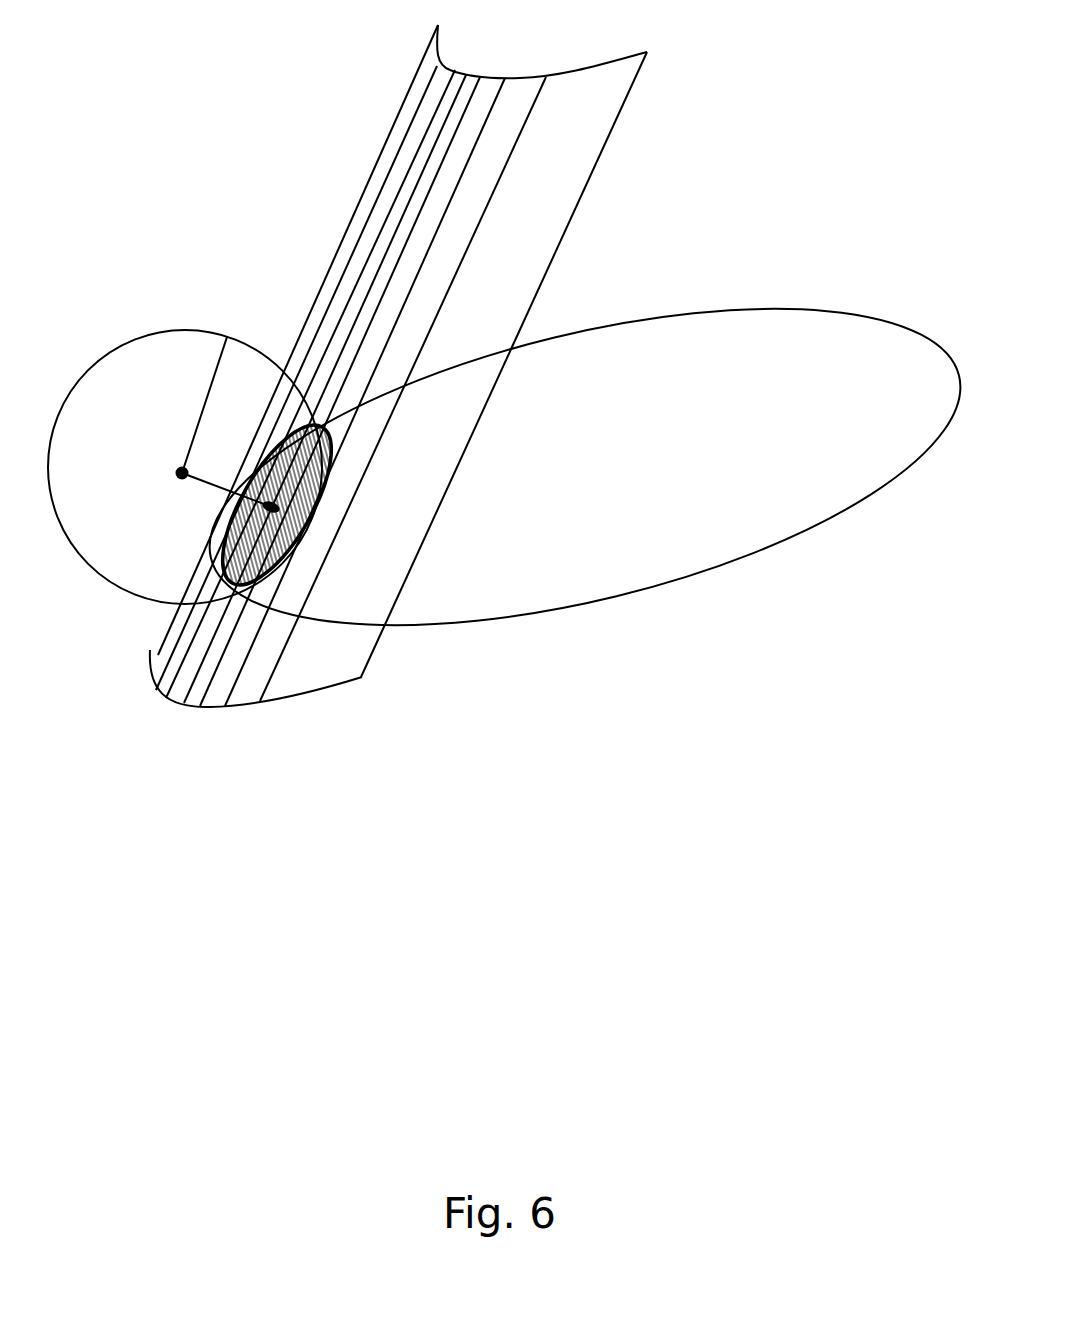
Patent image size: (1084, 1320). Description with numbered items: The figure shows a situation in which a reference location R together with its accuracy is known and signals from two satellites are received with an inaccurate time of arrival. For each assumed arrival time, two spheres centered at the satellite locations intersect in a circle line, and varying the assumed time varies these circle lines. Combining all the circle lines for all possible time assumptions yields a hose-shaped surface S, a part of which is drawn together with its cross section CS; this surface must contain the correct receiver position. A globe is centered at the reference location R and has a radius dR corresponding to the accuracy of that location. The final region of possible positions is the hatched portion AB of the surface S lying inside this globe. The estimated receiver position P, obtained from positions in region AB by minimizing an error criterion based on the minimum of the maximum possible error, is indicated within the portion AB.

The surface S is at (572, 123).
The cross section CS is at (823, 305).
The portion of the surface AB is at (267, 530).
The receiver position P is at (242, 494).
The reference location R is at (170, 464).
The radius dR is at (185, 467).